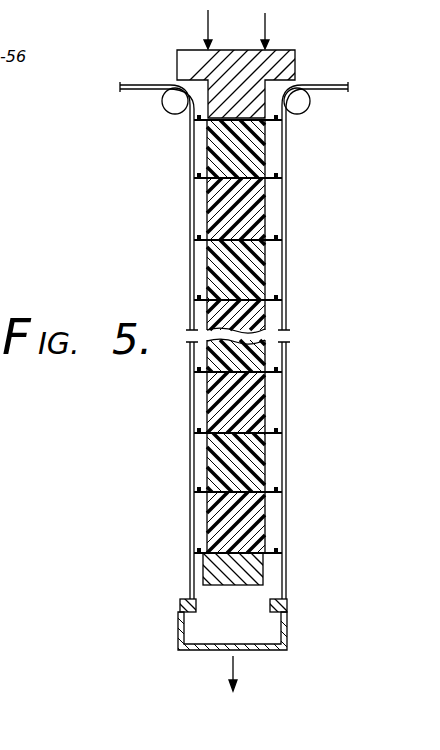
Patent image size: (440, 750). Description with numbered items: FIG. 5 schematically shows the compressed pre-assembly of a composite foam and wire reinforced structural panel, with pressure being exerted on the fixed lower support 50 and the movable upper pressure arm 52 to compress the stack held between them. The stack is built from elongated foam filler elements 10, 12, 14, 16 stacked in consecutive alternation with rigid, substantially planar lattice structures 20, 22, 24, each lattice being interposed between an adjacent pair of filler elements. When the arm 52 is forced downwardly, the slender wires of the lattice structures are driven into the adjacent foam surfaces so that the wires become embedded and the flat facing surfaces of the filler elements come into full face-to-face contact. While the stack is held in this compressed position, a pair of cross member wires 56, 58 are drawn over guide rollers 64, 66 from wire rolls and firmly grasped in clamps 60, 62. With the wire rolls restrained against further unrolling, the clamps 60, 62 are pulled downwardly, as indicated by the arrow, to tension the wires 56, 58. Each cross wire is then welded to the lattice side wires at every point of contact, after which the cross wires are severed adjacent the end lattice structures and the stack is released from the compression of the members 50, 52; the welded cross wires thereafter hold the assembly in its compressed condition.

The movable upper pressure arm 52 is at (283, 57).
The guide roller 64 is at (171, 107).
The guide roller 66 is at (302, 107).
The cross member wire 56 is at (190, 209).
The cross member wire 58 is at (286, 213).
The filler element 16 is at (270, 363).
The lattice structure 24 is at (284, 374).
The filler element 14 is at (270, 416).
The lattice structure 22 is at (284, 435).
The filler element 12 is at (268, 476).
The lattice structure 20 is at (284, 494).
The filler element 10 is at (255, 535).
The clamp 60 is at (180, 605).
The clamp 62 is at (288, 607).
The fixed lower support 50 is at (228, 585).